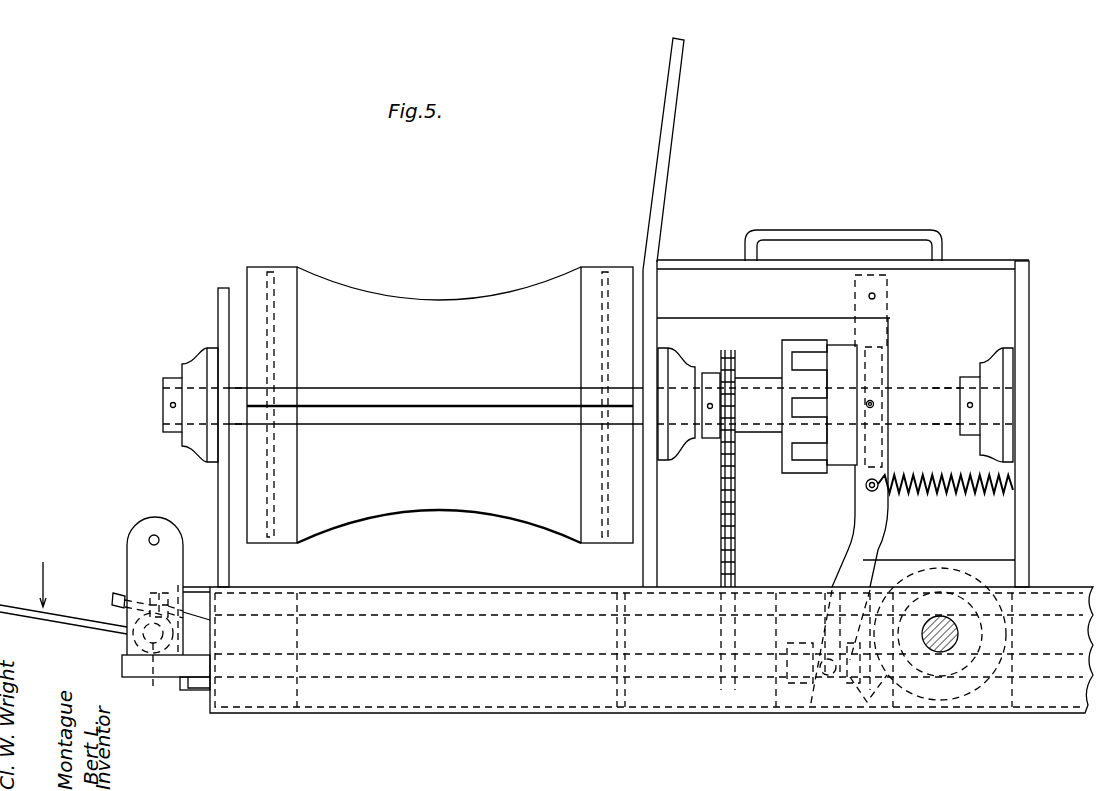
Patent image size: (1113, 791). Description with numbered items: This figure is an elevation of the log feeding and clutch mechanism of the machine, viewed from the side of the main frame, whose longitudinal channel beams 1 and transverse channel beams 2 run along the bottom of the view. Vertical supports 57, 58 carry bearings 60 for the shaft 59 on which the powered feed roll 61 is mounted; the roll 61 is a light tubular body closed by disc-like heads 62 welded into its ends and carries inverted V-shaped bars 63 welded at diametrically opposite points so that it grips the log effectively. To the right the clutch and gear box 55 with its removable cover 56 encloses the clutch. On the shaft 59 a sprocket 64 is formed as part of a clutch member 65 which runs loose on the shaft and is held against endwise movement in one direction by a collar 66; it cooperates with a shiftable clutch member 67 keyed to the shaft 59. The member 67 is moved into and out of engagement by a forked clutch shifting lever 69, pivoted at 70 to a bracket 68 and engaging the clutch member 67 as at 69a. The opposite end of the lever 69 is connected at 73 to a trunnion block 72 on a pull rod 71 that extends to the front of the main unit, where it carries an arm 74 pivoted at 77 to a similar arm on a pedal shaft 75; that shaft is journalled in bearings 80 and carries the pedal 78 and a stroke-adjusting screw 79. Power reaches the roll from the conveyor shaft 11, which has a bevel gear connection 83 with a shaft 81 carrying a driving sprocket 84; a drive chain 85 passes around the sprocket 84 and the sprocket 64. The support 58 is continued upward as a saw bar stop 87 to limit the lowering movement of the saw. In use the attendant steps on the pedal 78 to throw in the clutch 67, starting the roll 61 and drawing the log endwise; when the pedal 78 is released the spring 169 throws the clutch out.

The longitudinal channel irons or beams 1 is at (380, 693).
The transverse channel irons or beams 2 is at (232, 710).
The conveyor shaft 11 is at (942, 642).
The clutch and gear box 55 is at (1000, 292).
The removable cover 56 is at (967, 264).
The vertical support 57 is at (218, 300).
The vertical support 58 is at (648, 303).
The shaft 59 is at (240, 400).
The bearings 60 is at (190, 438).
The powered feed roll 61 is at (437, 302).
The disc-like heads 62 is at (276, 465).
The inverted V-shaped bars 63 is at (406, 396).
The sprocket 64 is at (735, 405).
The clutch member 65 is at (795, 475).
The collar 66 is at (710, 372).
The shiftable clutch member 67 is at (843, 475).
The bracket 68 is at (712, 270).
The forked clutch shifting lever 69 is at (884, 532).
The clutch engaging portion 69a is at (865, 405).
The pivot 70 is at (880, 293).
The pull rod 71 is at (568, 678).
The trunnion block 72 is at (823, 680).
The connection 73 is at (842, 687).
The arm 74 is at (130, 529).
The pedal shaft 75 is at (150, 683).
The pivot 77 is at (157, 536).
The pedal 78 is at (98, 625).
The stroke-adjusting screw 79 is at (116, 594).
The bearings 80 is at (185, 690).
The shaft 81 is at (527, 615).
The bevel gear connection 83 is at (895, 585).
The driving sprocket 84 is at (729, 615).
The drive chain 85 is at (735, 523).
The saw bar stop 87 is at (665, 143).
The spring 169 is at (967, 487).